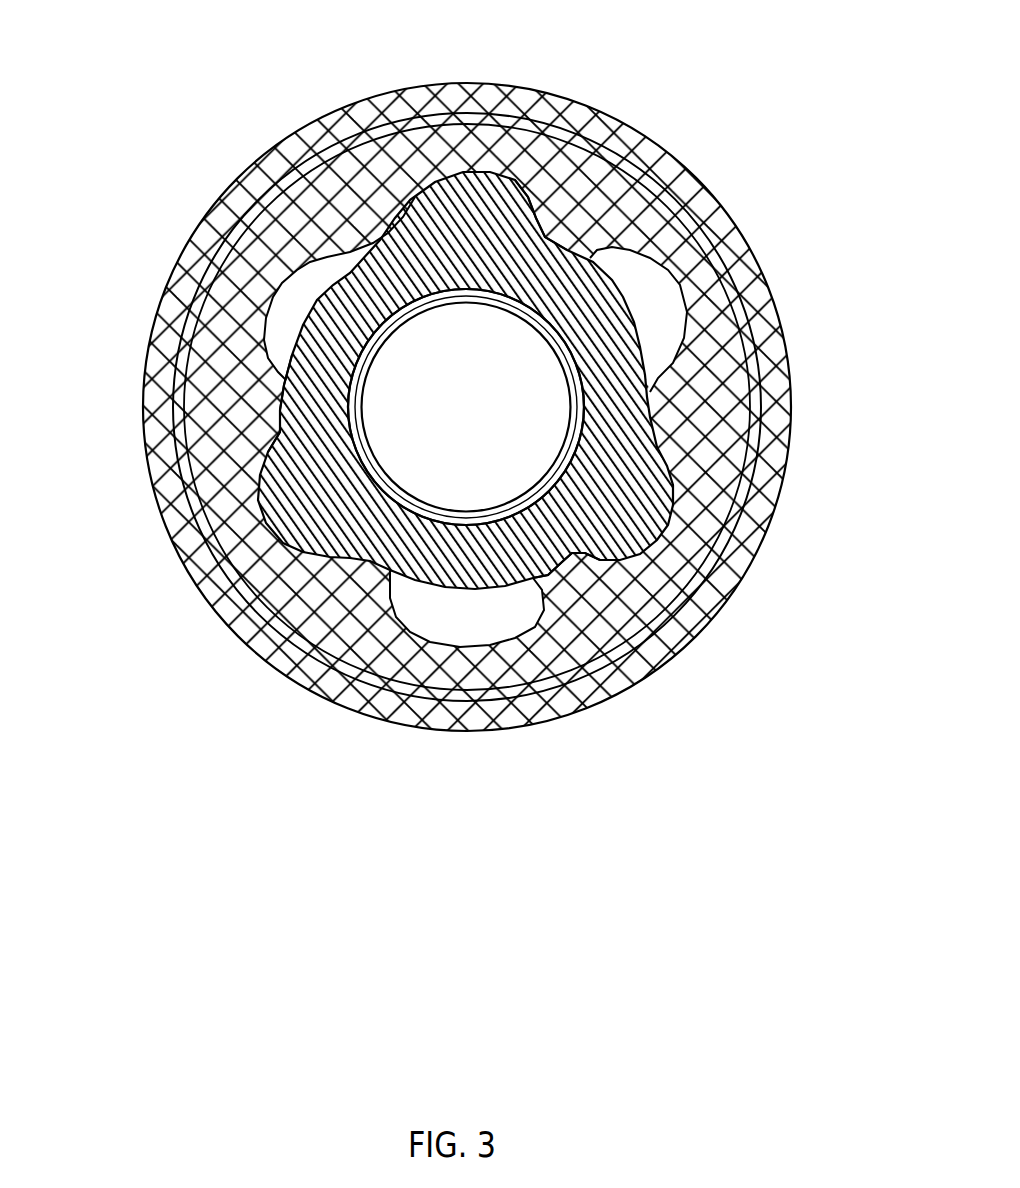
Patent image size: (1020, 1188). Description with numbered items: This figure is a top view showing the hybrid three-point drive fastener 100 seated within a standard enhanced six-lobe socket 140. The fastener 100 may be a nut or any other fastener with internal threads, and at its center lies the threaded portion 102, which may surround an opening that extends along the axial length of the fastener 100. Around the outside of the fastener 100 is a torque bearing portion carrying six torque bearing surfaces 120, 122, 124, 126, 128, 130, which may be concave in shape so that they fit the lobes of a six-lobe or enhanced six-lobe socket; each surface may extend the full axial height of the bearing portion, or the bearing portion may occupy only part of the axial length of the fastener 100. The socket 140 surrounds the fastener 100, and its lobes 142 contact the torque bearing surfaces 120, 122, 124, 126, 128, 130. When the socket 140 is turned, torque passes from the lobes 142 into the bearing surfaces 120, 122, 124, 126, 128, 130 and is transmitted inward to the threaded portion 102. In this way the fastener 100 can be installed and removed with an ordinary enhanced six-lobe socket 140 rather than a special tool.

The fastener 100 is at (462, 371).
The threaded portion 102 is at (430, 503).
The torque bearing surface 120 is at (373, 233).
The torque bearing surface 122 is at (542, 235).
The torque bearing surface 124 is at (651, 416).
The torque bearing surface 126 is at (561, 567).
The torque bearing surface 128 is at (355, 566).
The torque bearing surface 130 is at (268, 406).
The standard enhanced six-lobe socket 140 is at (145, 486).
The lobes 142 is at (580, 215).